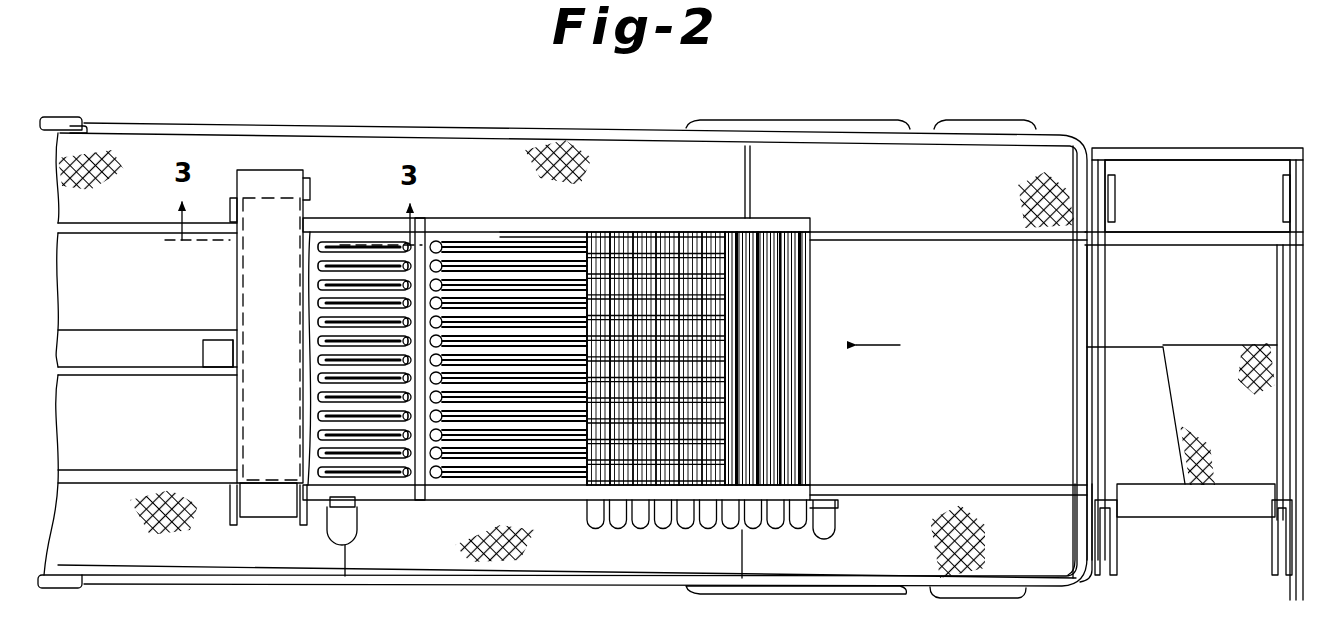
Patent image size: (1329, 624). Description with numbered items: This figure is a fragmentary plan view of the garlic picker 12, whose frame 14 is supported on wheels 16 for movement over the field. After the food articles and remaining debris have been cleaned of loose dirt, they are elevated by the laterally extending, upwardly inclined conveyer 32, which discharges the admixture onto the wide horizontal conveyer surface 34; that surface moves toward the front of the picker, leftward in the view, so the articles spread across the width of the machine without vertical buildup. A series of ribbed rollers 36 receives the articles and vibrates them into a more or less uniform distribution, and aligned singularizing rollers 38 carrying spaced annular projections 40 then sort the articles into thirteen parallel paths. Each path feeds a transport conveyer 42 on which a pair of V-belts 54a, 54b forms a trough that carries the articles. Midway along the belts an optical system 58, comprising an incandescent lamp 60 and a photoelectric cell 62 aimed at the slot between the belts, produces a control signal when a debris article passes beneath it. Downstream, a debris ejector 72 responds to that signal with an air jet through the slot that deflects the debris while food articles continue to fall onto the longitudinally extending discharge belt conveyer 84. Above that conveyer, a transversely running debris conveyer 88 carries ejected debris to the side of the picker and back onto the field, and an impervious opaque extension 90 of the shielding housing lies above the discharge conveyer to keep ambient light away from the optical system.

The garlic picker 12 is at (262, 92).
The frame 14 is at (1157, 238).
The wheels 16 is at (768, 128).
The laterally extending upwardly inclined conveyer 32 is at (1206, 522).
The horizontal conveyer surface 34 is at (1010, 357).
The ribbed rollers 36 is at (772, 271).
The singularizing rollers 38 is at (660, 245).
The annular projections 40 is at (716, 245).
The transport conveyer 42 is at (478, 245).
The V-belt 54a is at (590, 245).
The V-belt 54b is at (520, 245).
The optical system 58 is at (428, 222).
The incandescent lamp 60 is at (438, 478).
The photoelectric cell 62 is at (408, 476).
The debris ejector 72 is at (340, 247).
The discharge belt conveyer 84 is at (156, 285).
The debris conveyer 88 is at (290, 194).
The impervious opaque extension 90 is at (248, 315).